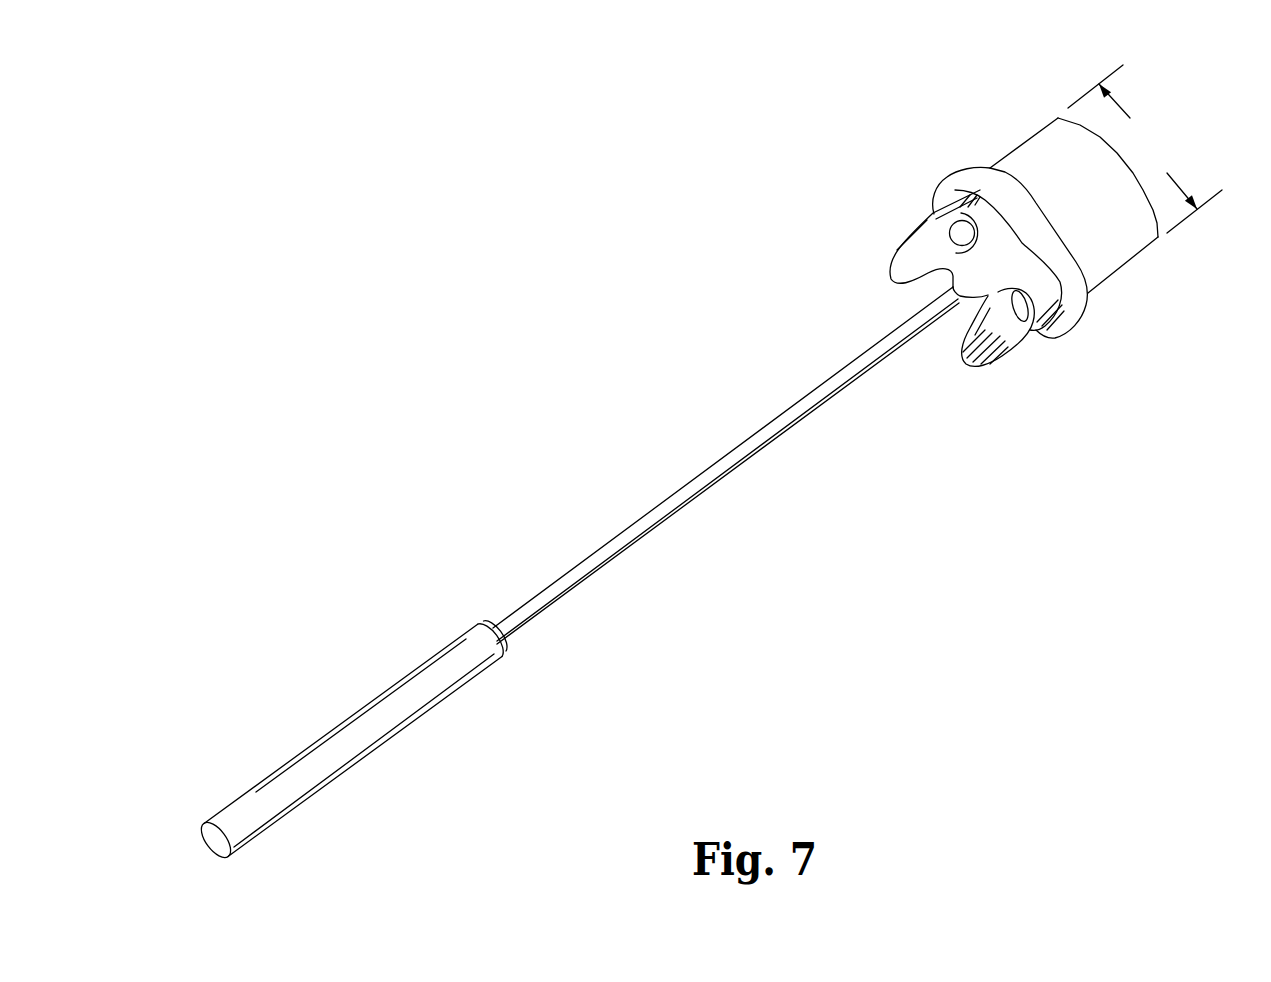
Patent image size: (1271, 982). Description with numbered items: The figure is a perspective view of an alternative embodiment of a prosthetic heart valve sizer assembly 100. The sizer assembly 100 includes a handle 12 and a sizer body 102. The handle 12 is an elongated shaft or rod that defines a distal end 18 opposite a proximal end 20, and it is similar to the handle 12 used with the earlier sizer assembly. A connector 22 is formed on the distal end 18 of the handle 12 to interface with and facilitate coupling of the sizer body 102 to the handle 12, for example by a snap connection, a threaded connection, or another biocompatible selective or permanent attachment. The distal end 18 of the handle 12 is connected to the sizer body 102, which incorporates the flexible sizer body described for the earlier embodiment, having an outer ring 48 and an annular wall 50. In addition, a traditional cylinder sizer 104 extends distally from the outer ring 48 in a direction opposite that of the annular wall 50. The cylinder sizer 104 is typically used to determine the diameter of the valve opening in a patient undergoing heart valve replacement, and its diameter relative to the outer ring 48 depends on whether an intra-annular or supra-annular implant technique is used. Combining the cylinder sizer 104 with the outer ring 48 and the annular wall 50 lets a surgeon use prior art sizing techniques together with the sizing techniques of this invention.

The prosthetic heart valve sizer assembly 100 is at (455, 383).
The handle 12 is at (488, 603).
The distal end 18 is at (939, 309).
The proximal end 20 is at (240, 834).
The connector 22 is at (344, 728).
The sizer body 102 is at (957, 147).
The cylinder sizer 104 is at (1122, 246).
The outer ring 48 is at (1074, 311).
The annular wall 50 is at (1008, 334).